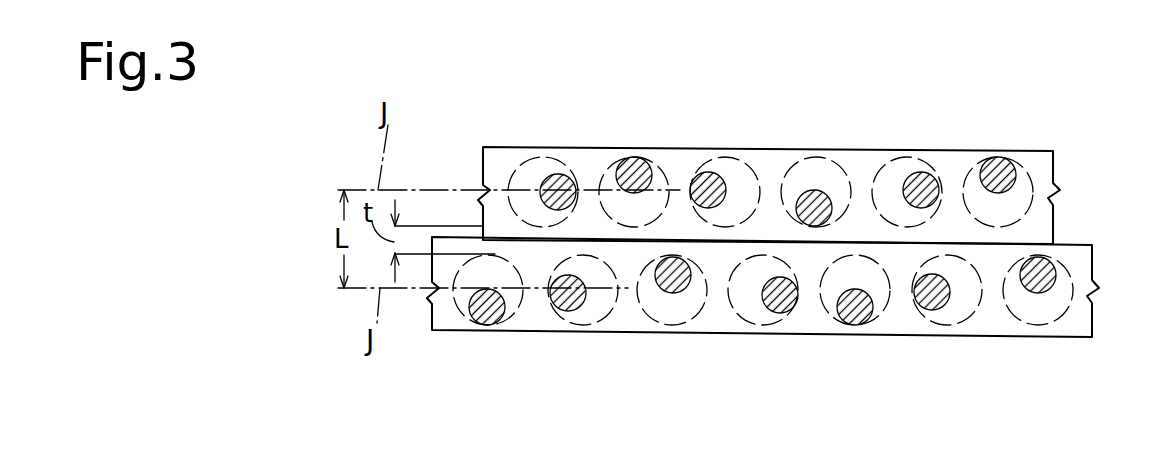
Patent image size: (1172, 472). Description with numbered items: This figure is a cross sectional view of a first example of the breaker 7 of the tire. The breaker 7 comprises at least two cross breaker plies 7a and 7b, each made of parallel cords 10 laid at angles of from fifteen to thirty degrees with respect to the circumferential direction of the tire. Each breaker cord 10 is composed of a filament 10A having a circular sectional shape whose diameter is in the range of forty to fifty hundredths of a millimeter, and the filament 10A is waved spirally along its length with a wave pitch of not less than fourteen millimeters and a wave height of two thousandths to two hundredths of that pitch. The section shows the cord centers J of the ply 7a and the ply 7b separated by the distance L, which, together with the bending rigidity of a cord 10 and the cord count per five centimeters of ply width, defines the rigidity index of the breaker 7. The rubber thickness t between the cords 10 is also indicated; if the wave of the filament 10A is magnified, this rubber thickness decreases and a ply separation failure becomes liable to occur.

The breaker 7 is at (796, 210).
The breaker ply 7a is at (1093, 258).
The breaker ply 7b is at (1057, 158).
The breaker cord 10 is at (1005, 162).
The filament 10A is at (912, 173).